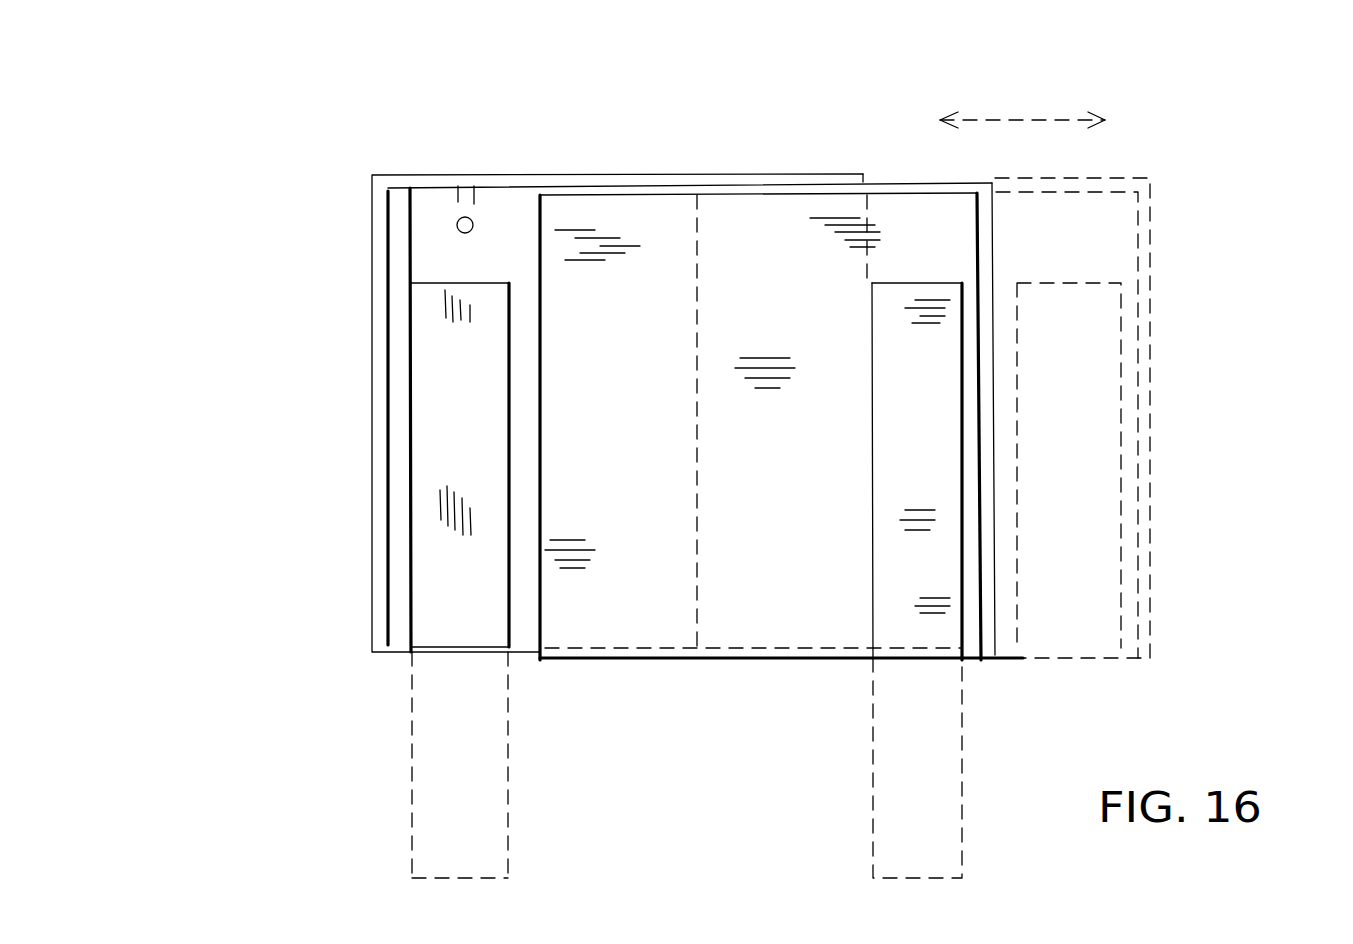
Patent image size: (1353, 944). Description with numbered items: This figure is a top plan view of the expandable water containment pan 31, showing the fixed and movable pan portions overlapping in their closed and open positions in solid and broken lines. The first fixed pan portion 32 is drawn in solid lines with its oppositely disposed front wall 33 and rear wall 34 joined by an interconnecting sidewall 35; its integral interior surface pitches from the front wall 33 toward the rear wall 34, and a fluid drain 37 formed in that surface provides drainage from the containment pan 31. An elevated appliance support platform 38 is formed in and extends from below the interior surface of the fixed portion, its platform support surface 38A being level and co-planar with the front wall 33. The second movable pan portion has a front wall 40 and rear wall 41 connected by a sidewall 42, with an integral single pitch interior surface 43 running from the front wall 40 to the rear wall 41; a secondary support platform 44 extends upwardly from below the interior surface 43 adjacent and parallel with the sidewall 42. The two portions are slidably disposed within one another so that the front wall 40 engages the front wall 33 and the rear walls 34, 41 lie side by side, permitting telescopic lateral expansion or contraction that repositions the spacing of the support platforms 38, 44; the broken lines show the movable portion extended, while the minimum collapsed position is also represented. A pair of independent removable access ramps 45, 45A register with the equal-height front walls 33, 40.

The expandable water containment pan 31 is at (840, 102).
The first fixed pan portion 32 is at (442, 112).
The front wall 33 is at (422, 650).
The rear wall 34 is at (412, 172).
The sidewall 35 is at (372, 300).
The fluid drain 37 is at (455, 232).
The elevated appliance support platform 38 is at (410, 483).
The platform support surface 38A is at (450, 400).
The front wall 40 is at (790, 660).
The rear wall 41 is at (810, 190).
The sidewall 42 is at (1150, 465).
The interior surface 43 is at (775, 240).
The secondary support platform 44 is at (940, 297).
The removable access ramp 45 is at (445, 778).
The removable access ramp 45A is at (965, 755).